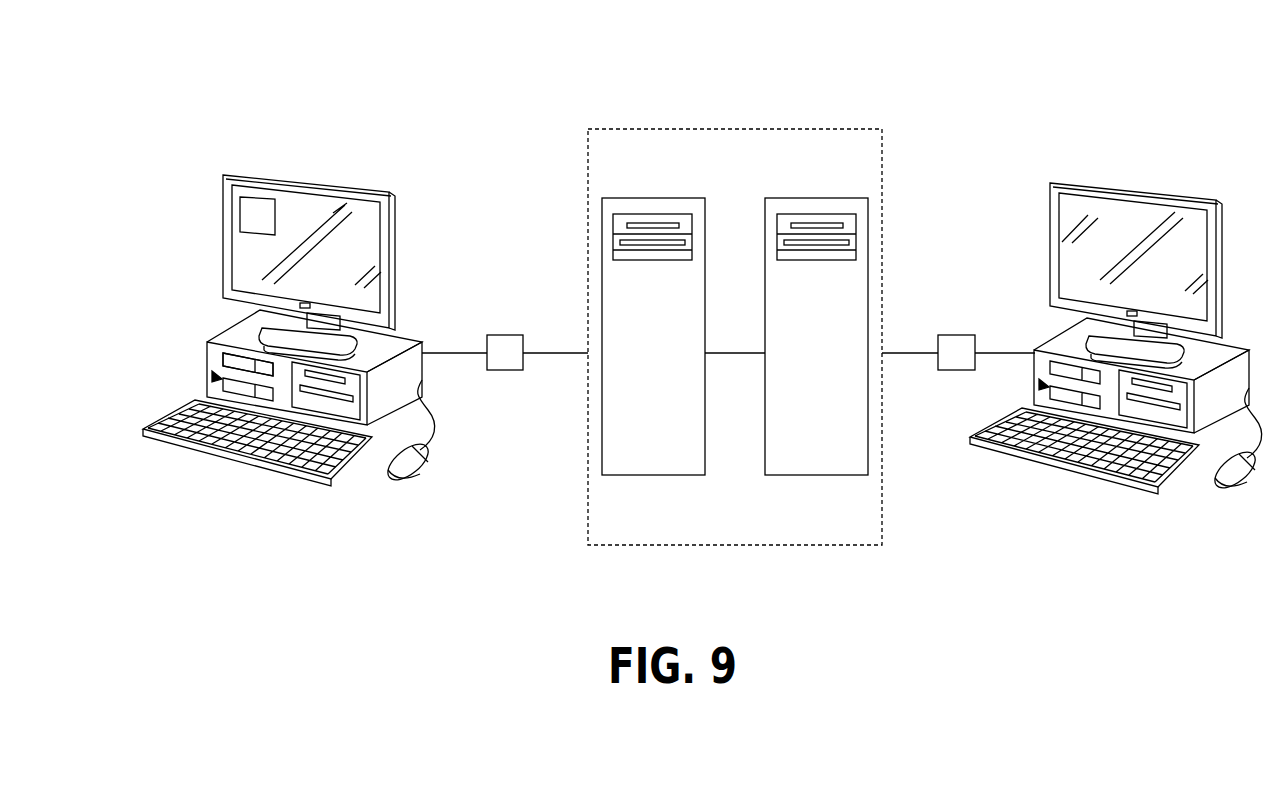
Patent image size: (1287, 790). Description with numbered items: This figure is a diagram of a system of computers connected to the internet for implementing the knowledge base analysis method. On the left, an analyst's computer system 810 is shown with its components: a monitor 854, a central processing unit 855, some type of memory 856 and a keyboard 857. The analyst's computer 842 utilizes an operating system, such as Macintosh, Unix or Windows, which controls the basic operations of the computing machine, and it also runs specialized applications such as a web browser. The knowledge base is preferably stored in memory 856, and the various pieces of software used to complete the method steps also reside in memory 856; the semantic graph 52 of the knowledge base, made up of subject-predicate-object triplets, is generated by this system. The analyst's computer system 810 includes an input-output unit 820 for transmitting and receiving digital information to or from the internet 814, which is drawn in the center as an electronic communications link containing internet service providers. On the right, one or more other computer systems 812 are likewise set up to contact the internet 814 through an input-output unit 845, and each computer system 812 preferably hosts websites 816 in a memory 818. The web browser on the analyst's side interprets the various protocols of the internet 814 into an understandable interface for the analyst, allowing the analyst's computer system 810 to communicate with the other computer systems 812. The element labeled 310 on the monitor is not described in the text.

The analyst's computer system 810 is at (397, 165).
The analyst's computer 842 is at (232, 170).
The monitor 854 is at (397, 235).
The displayed window 310 is at (240, 204).
The semantic graph 52 is at (263, 385).
The central processing unit 855 is at (208, 357).
The memory 856 is at (215, 378).
The keyboard 857 is at (160, 416).
The input-output unit 820 is at (502, 371).
The internet 814 is at (623, 129).
The input-output unit 845 is at (958, 334).
The computer system 812 is at (1048, 161).
The websites 816 is at (1097, 393).
The memory 818 is at (1037, 385).